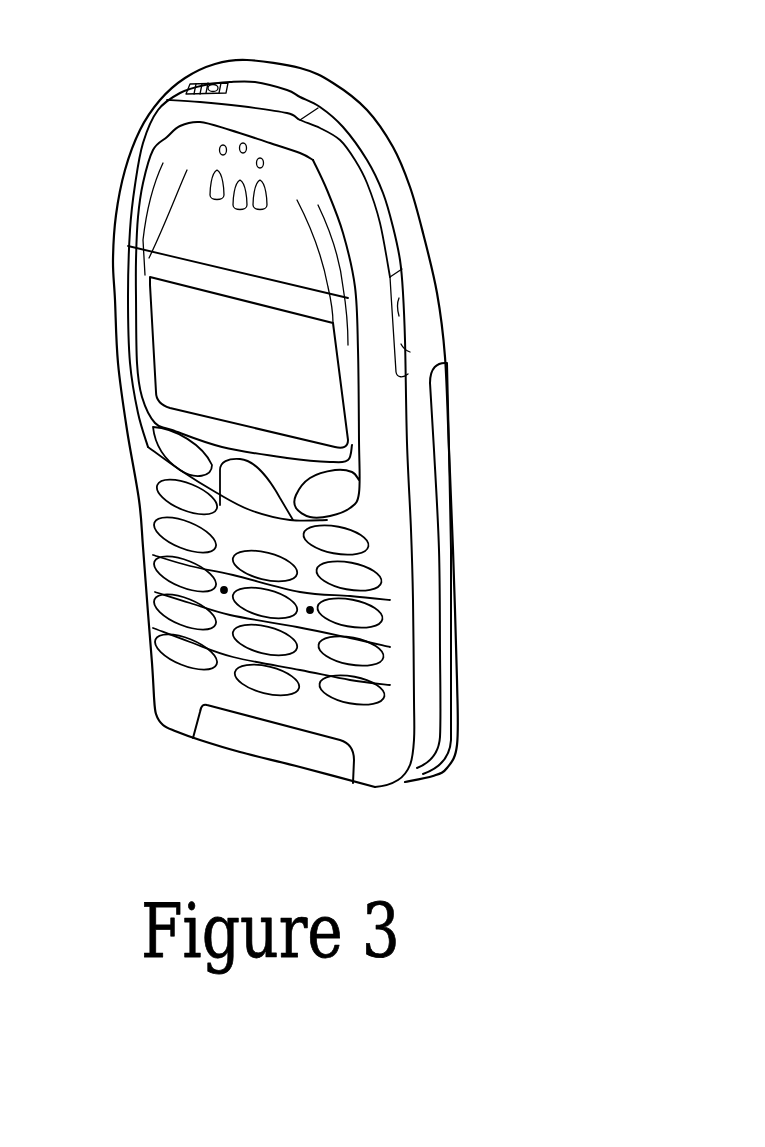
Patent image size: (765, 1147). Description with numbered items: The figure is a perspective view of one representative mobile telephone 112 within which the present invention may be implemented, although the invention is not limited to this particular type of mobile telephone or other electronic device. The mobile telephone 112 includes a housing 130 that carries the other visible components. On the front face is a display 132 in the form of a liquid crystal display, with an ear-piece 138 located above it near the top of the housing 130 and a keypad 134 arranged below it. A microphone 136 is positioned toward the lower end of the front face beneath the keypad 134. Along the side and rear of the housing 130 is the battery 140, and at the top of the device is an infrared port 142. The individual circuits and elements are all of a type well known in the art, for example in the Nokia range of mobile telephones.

The mobile telephone 112 is at (378, 70).
The housing 130 is at (411, 207).
The display 132 is at (320, 398).
The keypad 134 is at (350, 695).
The microphone 136 is at (217, 733).
The ear-piece 138 is at (213, 173).
The battery 140 is at (447, 677).
The infrared port 142 is at (261, 92).